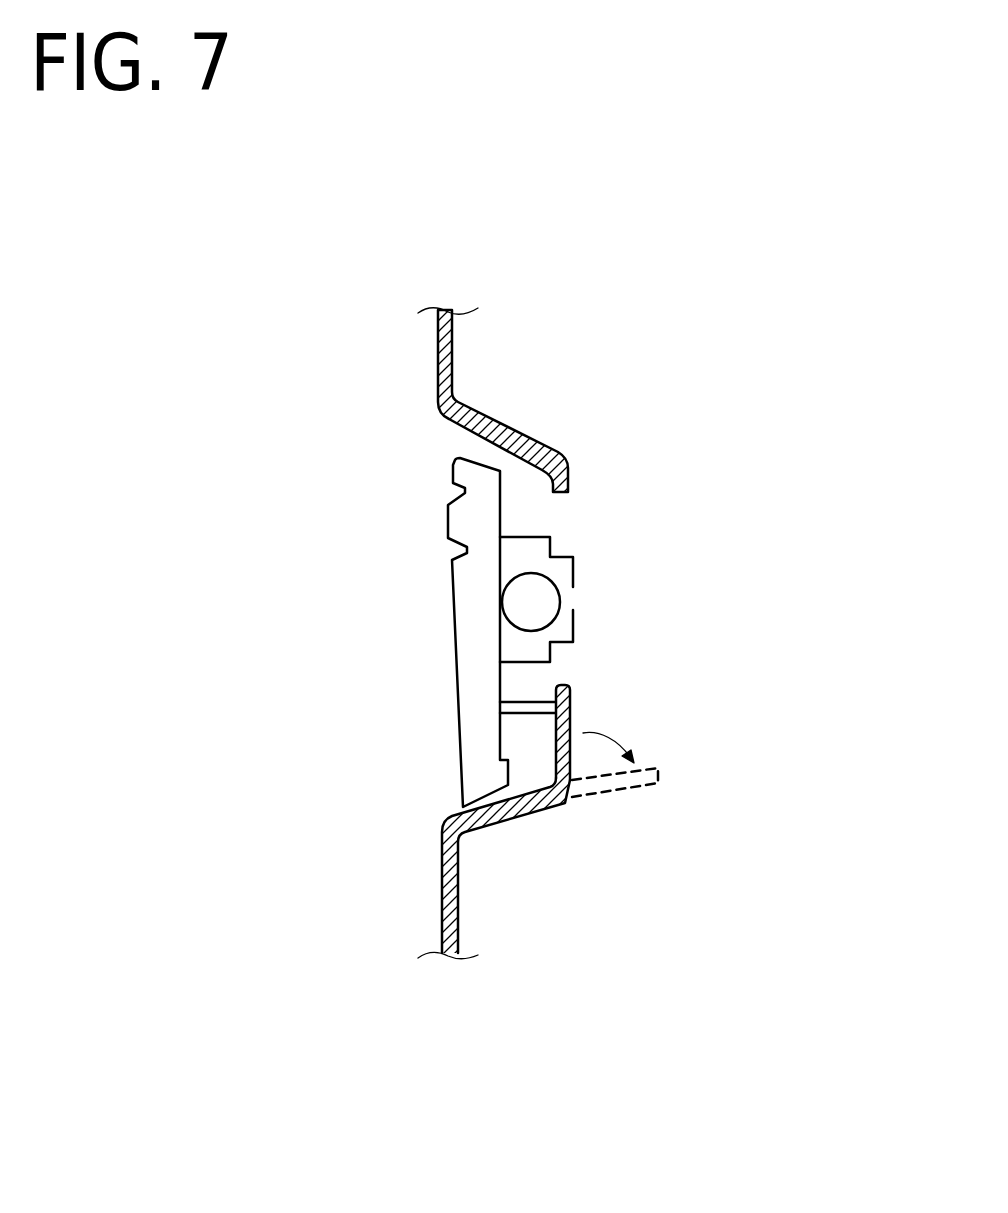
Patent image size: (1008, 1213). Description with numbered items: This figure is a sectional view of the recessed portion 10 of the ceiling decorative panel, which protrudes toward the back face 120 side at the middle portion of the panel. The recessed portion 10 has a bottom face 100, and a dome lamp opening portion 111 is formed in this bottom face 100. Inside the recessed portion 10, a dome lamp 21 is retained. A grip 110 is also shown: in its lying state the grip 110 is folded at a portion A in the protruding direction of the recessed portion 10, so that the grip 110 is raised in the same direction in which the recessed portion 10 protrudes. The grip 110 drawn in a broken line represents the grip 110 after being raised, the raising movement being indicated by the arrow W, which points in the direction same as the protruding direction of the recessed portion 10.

The back face 120 is at (452, 343).
The opening portion 111 is at (556, 517).
The bottom face 100 is at (570, 693).
The grip 110 is at (572, 723).
The dome lamp 21 is at (470, 622).
The recessed portion 10 is at (520, 736).
The arrow W is at (574, 723).
The portion A is at (563, 810).